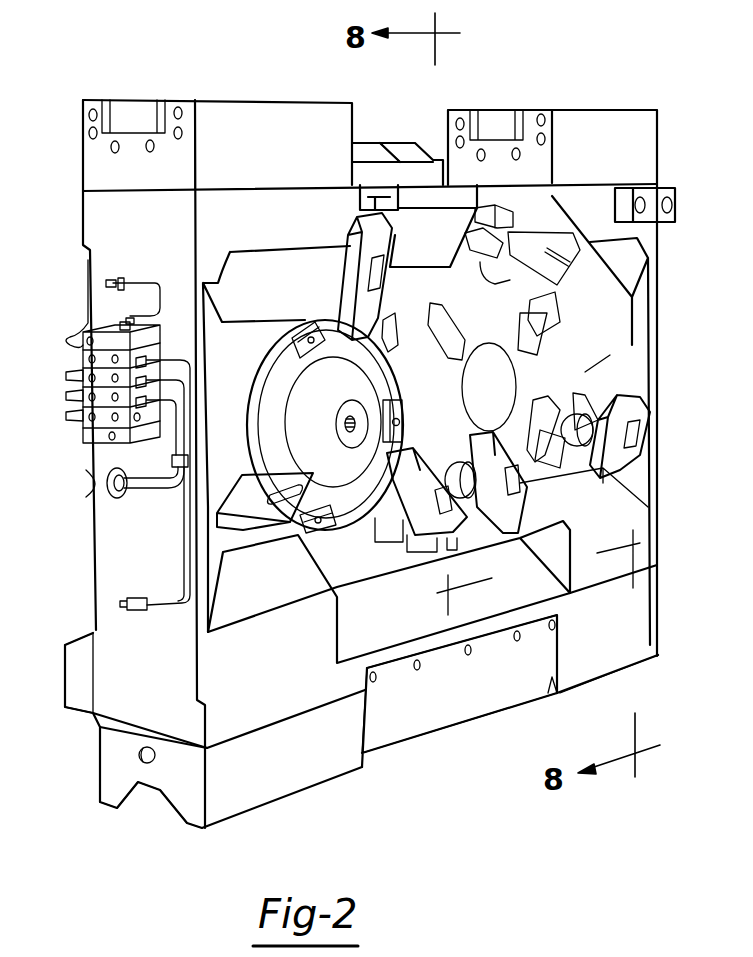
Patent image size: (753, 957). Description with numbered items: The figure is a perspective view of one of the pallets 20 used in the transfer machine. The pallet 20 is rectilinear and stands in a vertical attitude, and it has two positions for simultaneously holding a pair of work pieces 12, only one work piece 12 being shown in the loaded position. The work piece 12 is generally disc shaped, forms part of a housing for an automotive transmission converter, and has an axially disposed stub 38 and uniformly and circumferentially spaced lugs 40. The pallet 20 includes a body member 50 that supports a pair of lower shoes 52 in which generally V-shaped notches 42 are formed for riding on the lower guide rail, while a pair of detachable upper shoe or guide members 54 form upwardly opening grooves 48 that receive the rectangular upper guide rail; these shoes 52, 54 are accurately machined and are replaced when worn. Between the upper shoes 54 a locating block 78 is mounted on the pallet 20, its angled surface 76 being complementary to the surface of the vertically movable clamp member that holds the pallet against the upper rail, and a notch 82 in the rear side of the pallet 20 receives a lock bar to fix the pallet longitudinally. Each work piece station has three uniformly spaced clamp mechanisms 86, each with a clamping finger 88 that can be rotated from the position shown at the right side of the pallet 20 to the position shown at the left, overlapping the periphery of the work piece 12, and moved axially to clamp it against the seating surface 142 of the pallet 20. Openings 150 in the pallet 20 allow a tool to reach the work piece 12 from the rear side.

The work piece 12 is at (270, 356).
The pallet 20 is at (592, 97).
The stub 38 is at (370, 418).
The lugs 40 is at (308, 318).
The V-shaped notch 42 is at (170, 805).
The groove 48 is at (125, 108).
The body member 50 is at (652, 248).
The lower shoes 52 is at (270, 790).
The upper shoe or guide members 54 is at (257, 115).
The angled surface 76 is at (408, 143).
The locating block 78 is at (372, 140).
The notch 82 is at (83, 703).
The clamp mechanisms 86 is at (352, 240).
The clamping finger 88 is at (377, 315).
The seating surface 142 is at (583, 372).
The openings 150 is at (514, 380).